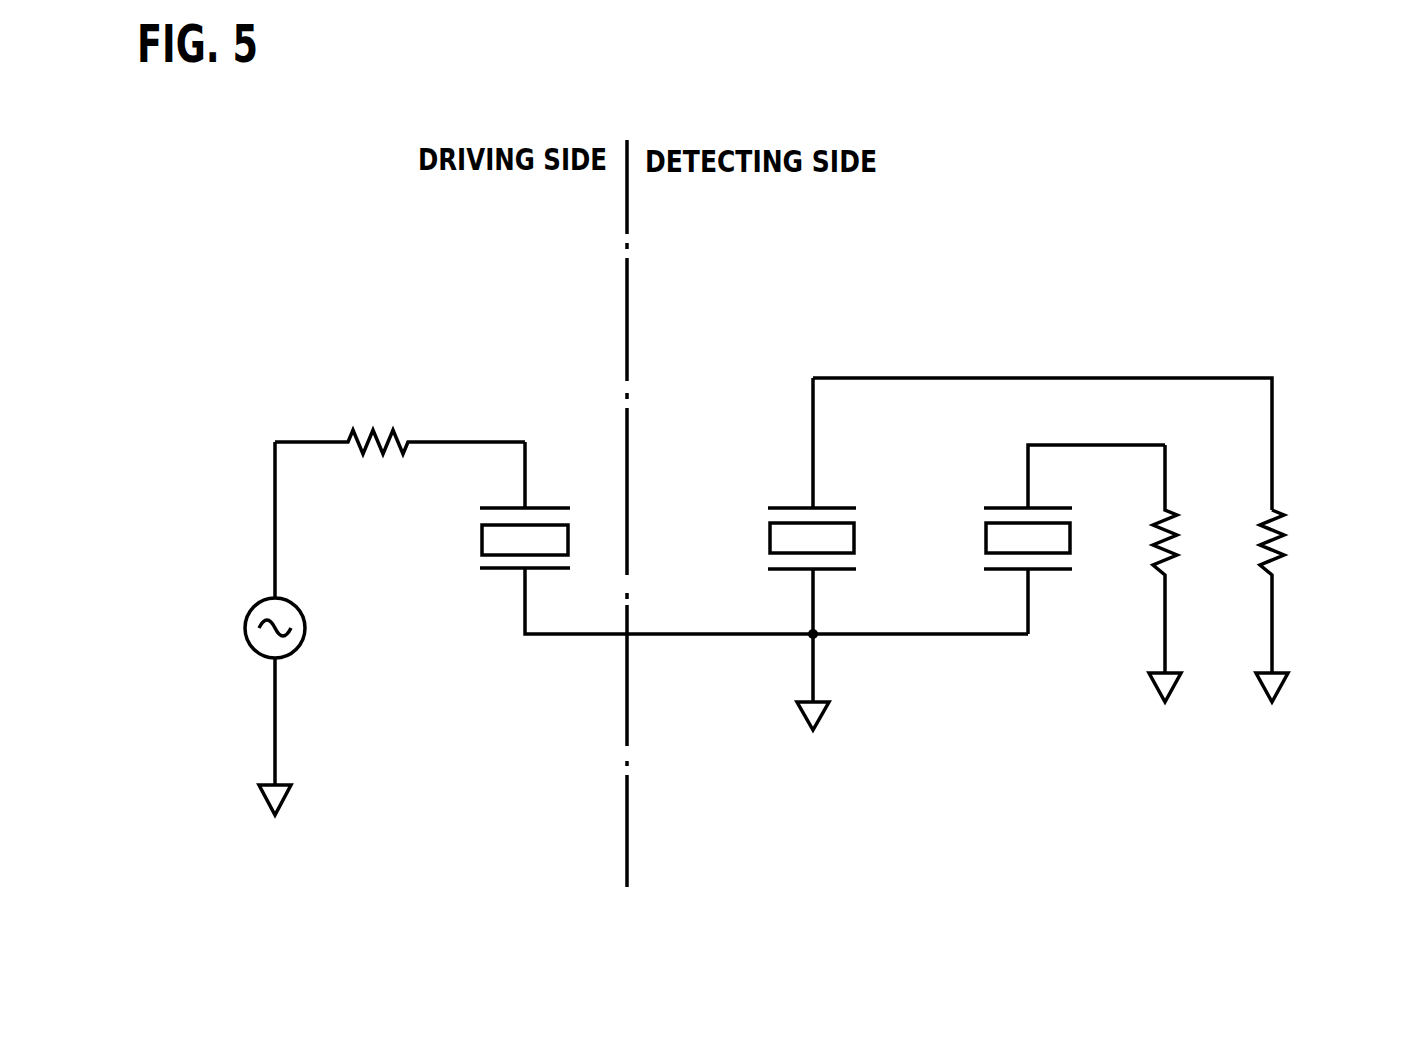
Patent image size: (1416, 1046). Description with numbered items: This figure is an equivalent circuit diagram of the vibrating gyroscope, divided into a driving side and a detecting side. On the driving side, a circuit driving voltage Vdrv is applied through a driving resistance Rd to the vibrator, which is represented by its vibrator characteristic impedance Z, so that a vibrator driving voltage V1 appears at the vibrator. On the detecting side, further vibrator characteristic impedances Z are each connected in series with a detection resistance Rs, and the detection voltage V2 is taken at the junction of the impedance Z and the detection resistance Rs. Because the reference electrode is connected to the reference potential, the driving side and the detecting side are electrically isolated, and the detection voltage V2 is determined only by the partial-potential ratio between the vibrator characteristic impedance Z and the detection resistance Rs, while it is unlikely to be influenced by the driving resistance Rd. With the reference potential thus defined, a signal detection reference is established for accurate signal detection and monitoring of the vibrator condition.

The circuit driving voltage Vdrv is at (222, 628).
The driving resistance Rd is at (400, 420).
The vibrator driving voltage V1 is at (526, 420).
The vibrator characteristic impedance Z is at (799, 554).
The detection voltage V2 is at (1165, 420).
The detection resistance Rs is at (1240, 573).